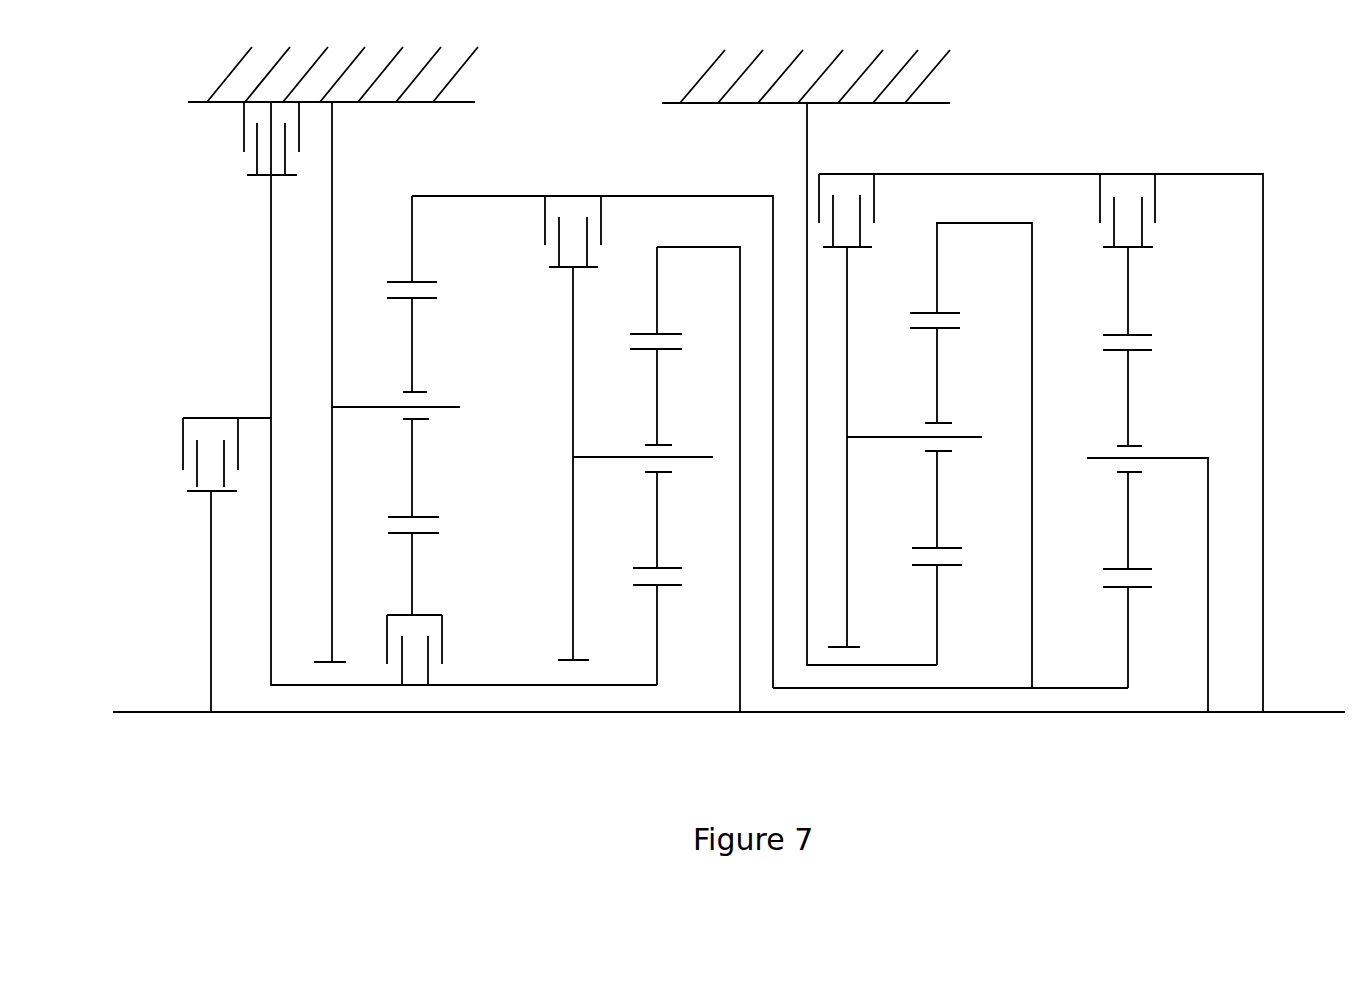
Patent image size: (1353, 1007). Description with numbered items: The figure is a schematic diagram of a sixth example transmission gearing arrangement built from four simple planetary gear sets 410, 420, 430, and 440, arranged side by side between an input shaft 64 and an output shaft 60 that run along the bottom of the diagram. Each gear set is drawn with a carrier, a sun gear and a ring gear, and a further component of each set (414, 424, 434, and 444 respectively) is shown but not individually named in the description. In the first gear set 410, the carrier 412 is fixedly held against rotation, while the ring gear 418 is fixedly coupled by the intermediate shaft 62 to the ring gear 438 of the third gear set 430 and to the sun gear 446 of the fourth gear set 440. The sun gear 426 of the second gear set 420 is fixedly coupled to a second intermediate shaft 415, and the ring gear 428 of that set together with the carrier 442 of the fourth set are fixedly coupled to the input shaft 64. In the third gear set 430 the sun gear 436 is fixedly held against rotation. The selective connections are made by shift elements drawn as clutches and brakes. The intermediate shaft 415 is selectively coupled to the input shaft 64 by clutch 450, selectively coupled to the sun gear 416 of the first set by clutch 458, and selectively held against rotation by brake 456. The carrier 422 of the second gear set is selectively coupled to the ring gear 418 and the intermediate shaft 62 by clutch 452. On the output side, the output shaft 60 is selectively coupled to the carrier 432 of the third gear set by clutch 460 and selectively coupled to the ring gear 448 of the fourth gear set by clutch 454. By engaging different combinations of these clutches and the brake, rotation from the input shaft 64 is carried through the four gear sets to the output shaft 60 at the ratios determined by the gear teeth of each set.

The output shaft 60 is at (1318, 712).
The intermediate shaft 62 is at (983, 690).
The input shaft 64 is at (323, 712).
The planetary gear set 410 is at (405, 482).
The carrier 412 is at (332, 467).
The first ring gear 414 is at (368, 323).
The intermediate shaft 415 is at (528, 687).
The sun gear 416 is at (413, 570).
The ring gear 418 is at (458, 273).
The planetary gear set 420 is at (626, 507).
The carrier 422 is at (572, 413).
The second ring gear 424 is at (660, 405).
The sun gear 426 is at (655, 623).
The ring gear 428 is at (657, 297).
The planetary gear set 430 is at (939, 495).
The carrier 432 is at (882, 437).
The third ring gear 434 is at (892, 357).
The sun gear 436 is at (935, 603).
The ring gear 438 is at (982, 303).
The planetary gear set 440 is at (1162, 509).
The carrier 442 is at (1200, 458).
The fourth ring gear 444 is at (1130, 408).
The sun gear 446 is at (1127, 625).
The ring gear 448 is at (1128, 300).
The clutch 450 is at (218, 420).
The clutch 452 is at (602, 212).
The clutch 454 is at (1142, 173).
The brake 456 is at (244, 128).
The clutch 458 is at (442, 642).
The clutch 460 is at (857, 173).